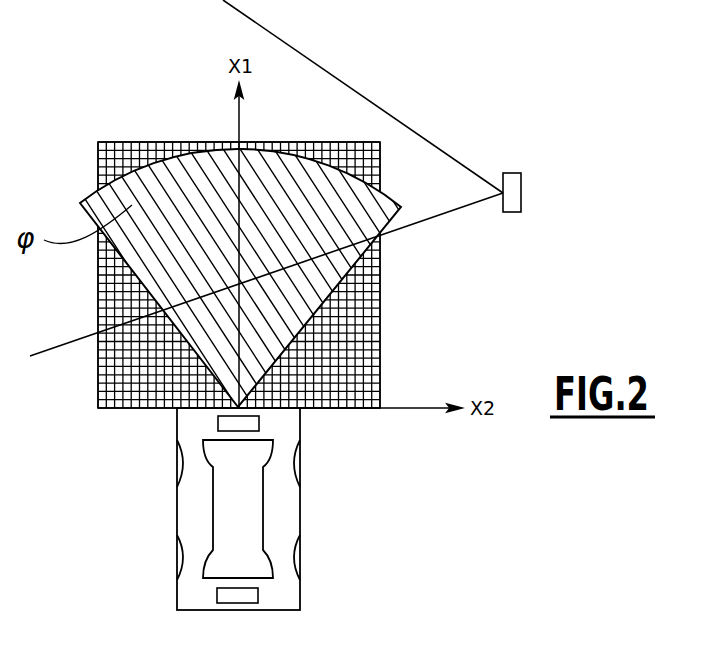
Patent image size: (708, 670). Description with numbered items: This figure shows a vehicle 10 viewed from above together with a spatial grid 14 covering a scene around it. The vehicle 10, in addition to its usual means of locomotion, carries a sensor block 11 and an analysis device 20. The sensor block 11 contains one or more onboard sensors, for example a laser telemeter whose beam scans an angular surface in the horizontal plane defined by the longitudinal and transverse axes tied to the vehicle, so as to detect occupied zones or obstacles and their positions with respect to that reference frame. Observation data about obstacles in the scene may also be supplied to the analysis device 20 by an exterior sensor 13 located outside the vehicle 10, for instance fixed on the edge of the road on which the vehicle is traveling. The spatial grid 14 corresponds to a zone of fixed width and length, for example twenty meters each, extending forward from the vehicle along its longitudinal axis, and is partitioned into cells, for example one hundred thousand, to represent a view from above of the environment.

The vehicle 10 is at (300, 510).
The sensor block 11 is at (258, 422).
The exterior sensor 13 is at (521, 193).
The spatial grid 14 is at (380, 343).
The analysis device 20 is at (258, 595).